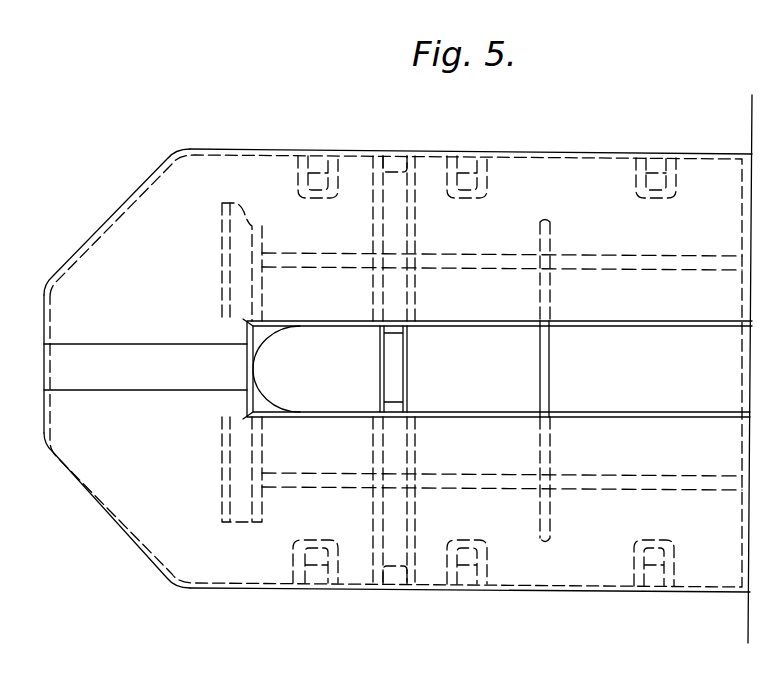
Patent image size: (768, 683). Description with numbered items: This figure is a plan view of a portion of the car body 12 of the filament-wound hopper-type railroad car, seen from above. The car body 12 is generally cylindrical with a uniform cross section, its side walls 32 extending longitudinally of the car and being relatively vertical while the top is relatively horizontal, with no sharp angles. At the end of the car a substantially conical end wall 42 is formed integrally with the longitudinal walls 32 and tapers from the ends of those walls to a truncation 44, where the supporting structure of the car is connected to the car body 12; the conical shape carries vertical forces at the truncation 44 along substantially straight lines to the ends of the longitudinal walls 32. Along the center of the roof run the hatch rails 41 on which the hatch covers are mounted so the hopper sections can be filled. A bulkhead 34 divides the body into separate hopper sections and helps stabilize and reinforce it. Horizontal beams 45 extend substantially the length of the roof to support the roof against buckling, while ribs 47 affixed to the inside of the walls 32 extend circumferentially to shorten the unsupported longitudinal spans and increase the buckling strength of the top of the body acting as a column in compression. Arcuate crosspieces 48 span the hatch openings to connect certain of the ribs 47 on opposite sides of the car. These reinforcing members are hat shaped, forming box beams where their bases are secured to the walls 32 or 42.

The car body 12 is at (191, 163).
The longitudinal walls 32 is at (523, 151).
The bulkheads 34 is at (550, 376).
The hatch rails 41 is at (457, 419).
The end wall 42 is at (117, 207).
The truncation 44 is at (44, 308).
The horizontal beams 45 is at (327, 266).
The ribs 47 is at (306, 221).
The arcuate crosspieces 48 is at (408, 362).